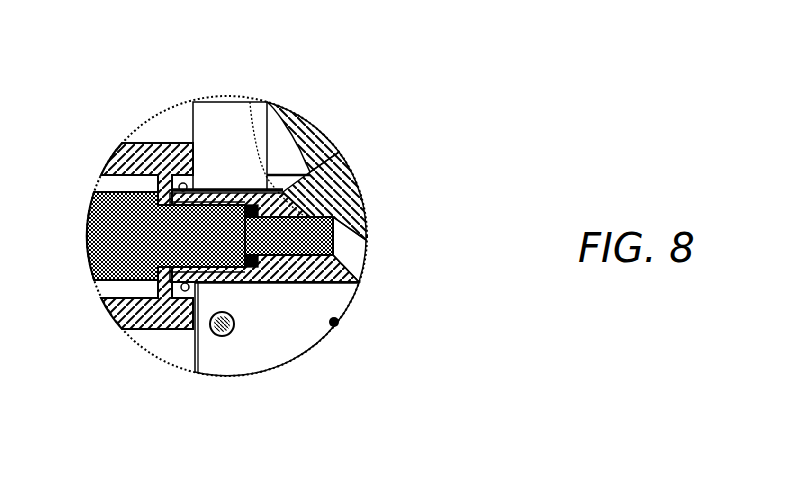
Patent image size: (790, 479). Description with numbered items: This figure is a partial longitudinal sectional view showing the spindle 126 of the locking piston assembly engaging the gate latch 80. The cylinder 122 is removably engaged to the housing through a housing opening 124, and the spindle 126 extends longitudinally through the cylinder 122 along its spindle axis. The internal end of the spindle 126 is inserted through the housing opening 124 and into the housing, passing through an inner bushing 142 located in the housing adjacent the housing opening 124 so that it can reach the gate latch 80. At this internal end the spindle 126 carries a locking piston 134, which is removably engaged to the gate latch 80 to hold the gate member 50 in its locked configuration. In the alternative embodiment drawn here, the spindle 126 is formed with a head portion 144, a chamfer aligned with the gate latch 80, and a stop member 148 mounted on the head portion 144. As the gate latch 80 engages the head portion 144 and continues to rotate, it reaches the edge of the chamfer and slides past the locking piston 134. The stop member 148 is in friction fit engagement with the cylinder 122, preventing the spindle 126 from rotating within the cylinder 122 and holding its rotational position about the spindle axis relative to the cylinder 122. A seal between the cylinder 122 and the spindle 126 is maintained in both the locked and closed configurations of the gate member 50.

The stop member 148 is at (268, 189).
The gate member 50 is at (313, 137).
The gate latch 80 is at (317, 202).
The spindle 126 is at (113, 235).
The cylinder 122 is at (138, 325).
The inner bushing 142 is at (186, 291).
The housing opening 124 is at (242, 295).
The head portion 144 is at (286, 248).
The locking piston 134 is at (313, 232).